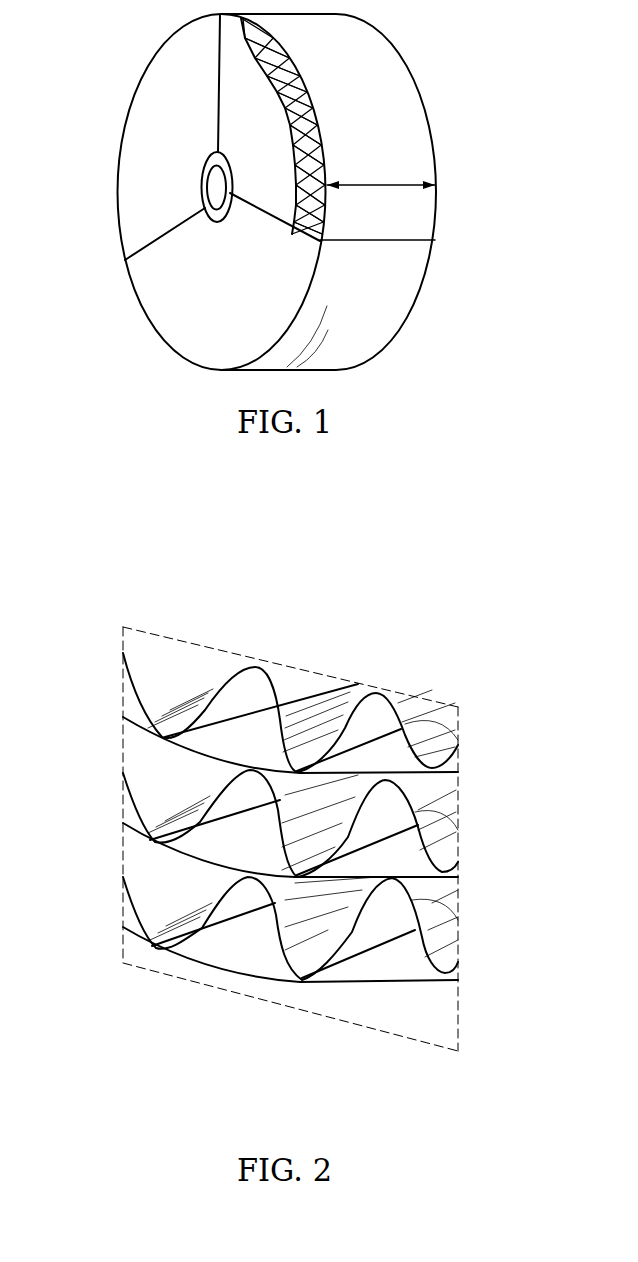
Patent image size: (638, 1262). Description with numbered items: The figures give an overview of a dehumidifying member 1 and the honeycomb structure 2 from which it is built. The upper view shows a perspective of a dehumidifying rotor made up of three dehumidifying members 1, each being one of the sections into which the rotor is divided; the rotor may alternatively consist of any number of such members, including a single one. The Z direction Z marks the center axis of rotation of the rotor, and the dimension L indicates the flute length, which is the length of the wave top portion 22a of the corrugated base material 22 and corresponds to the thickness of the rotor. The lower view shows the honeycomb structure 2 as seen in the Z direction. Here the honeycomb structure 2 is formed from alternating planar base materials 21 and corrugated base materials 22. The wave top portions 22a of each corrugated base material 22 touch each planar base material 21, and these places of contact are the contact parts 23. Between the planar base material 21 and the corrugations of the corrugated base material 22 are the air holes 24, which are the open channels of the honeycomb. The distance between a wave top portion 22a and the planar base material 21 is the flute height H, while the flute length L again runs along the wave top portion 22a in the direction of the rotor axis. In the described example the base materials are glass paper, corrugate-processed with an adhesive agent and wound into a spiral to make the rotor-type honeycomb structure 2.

In FIG. 1, the dehumidifying member 1 is at (383, 123).
In FIG. 1, the honeycomb structure 2 is at (283, 105).
In FIG. 1, the Z direction Z is at (206, 185).
In FIG. 1, the flute length L is at (405, 184).
In FIG. 2, the flute length L is at (279, 717).
In FIG. 2, the flute height H is at (253, 768).
In FIG. 2, the planar base material 21 is at (215, 746).
In FIG. 2, the corrugated base material 22 is at (452, 729).
In FIG. 2, the wave top portion 22a is at (290, 958).
In FIG. 2, the contact part 23 is at (270, 875).
In FIG. 2, the air hole 24 is at (397, 857).